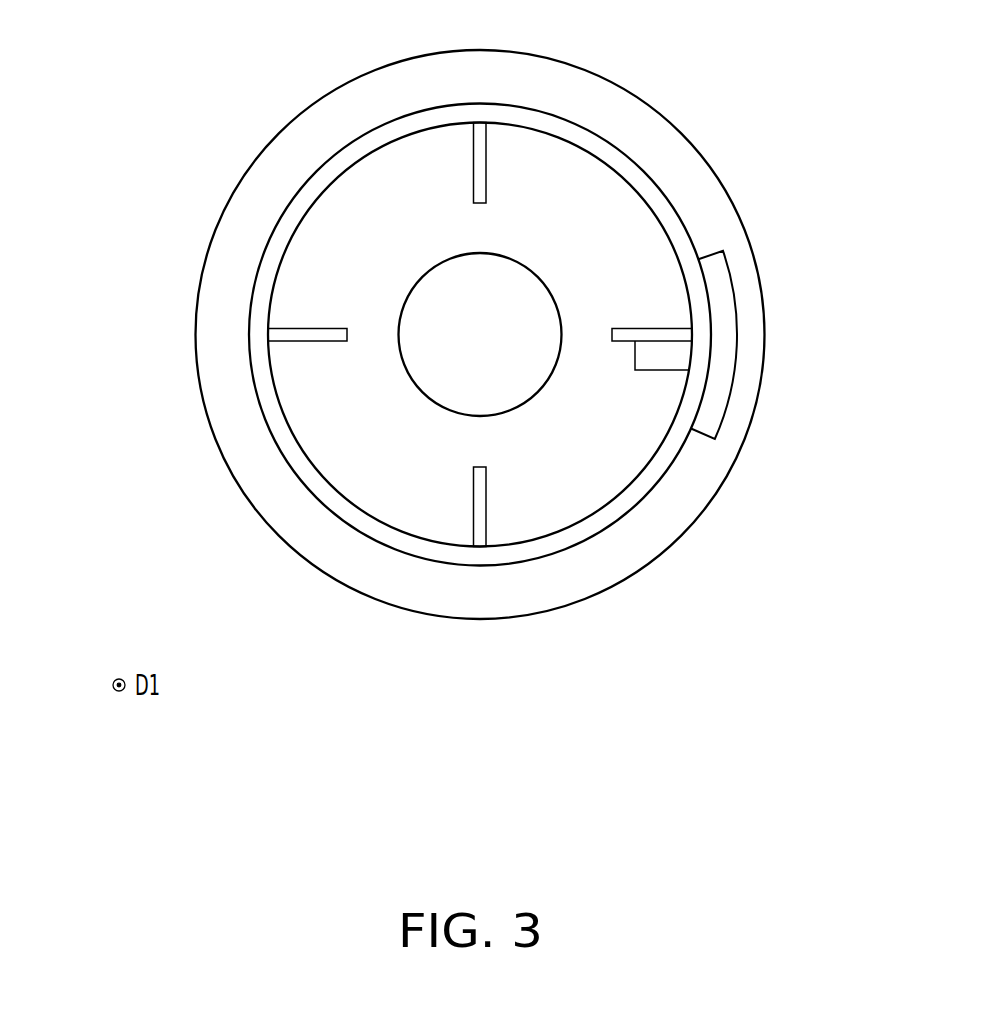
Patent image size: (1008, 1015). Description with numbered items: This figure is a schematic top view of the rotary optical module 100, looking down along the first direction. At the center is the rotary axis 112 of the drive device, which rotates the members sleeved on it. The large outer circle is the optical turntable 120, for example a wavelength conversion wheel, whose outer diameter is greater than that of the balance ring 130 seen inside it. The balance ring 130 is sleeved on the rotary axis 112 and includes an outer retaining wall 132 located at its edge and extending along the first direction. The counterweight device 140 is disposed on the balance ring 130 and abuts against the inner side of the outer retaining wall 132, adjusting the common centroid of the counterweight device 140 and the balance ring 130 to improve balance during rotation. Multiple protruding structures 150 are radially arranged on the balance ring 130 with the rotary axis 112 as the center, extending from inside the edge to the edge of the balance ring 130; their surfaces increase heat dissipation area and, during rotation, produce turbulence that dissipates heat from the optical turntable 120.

The rotary optical module 100 is at (897, 781).
The rotary axis 112 is at (523, 302).
The optical turntable 120 is at (220, 355).
The balance ring 130 is at (340, 278).
The outer retaining wall 132 is at (398, 127).
The counterweight device 140 is at (655, 360).
The protruding structures 150 is at (479, 534).